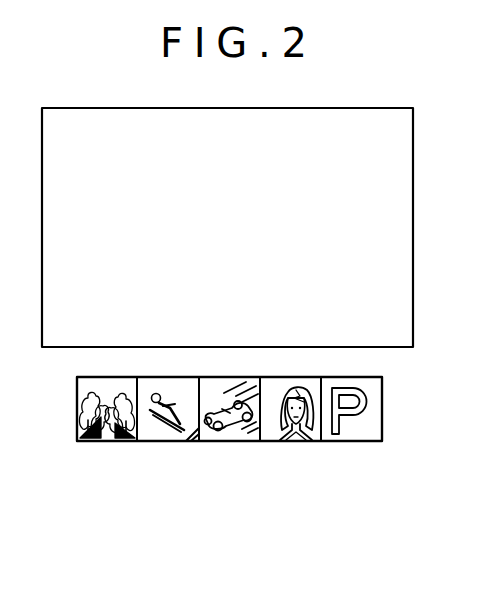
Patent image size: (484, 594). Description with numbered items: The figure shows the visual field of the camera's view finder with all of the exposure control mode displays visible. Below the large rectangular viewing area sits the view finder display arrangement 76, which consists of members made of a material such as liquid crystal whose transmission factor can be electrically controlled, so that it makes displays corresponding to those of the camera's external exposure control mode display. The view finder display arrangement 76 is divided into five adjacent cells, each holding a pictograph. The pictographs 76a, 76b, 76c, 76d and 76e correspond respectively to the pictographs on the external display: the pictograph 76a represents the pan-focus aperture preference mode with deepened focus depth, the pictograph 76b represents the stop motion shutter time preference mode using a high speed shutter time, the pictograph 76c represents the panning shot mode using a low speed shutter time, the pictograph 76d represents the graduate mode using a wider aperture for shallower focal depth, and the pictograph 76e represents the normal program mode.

The view finder display arrangement 76 is at (229, 457).
The pictograph 76a is at (108, 441).
The pictograph 76b is at (167, 441).
The pictograph 76c is at (234, 441).
The pictograph 76d is at (290, 441).
The pictograph 76e is at (349, 437).